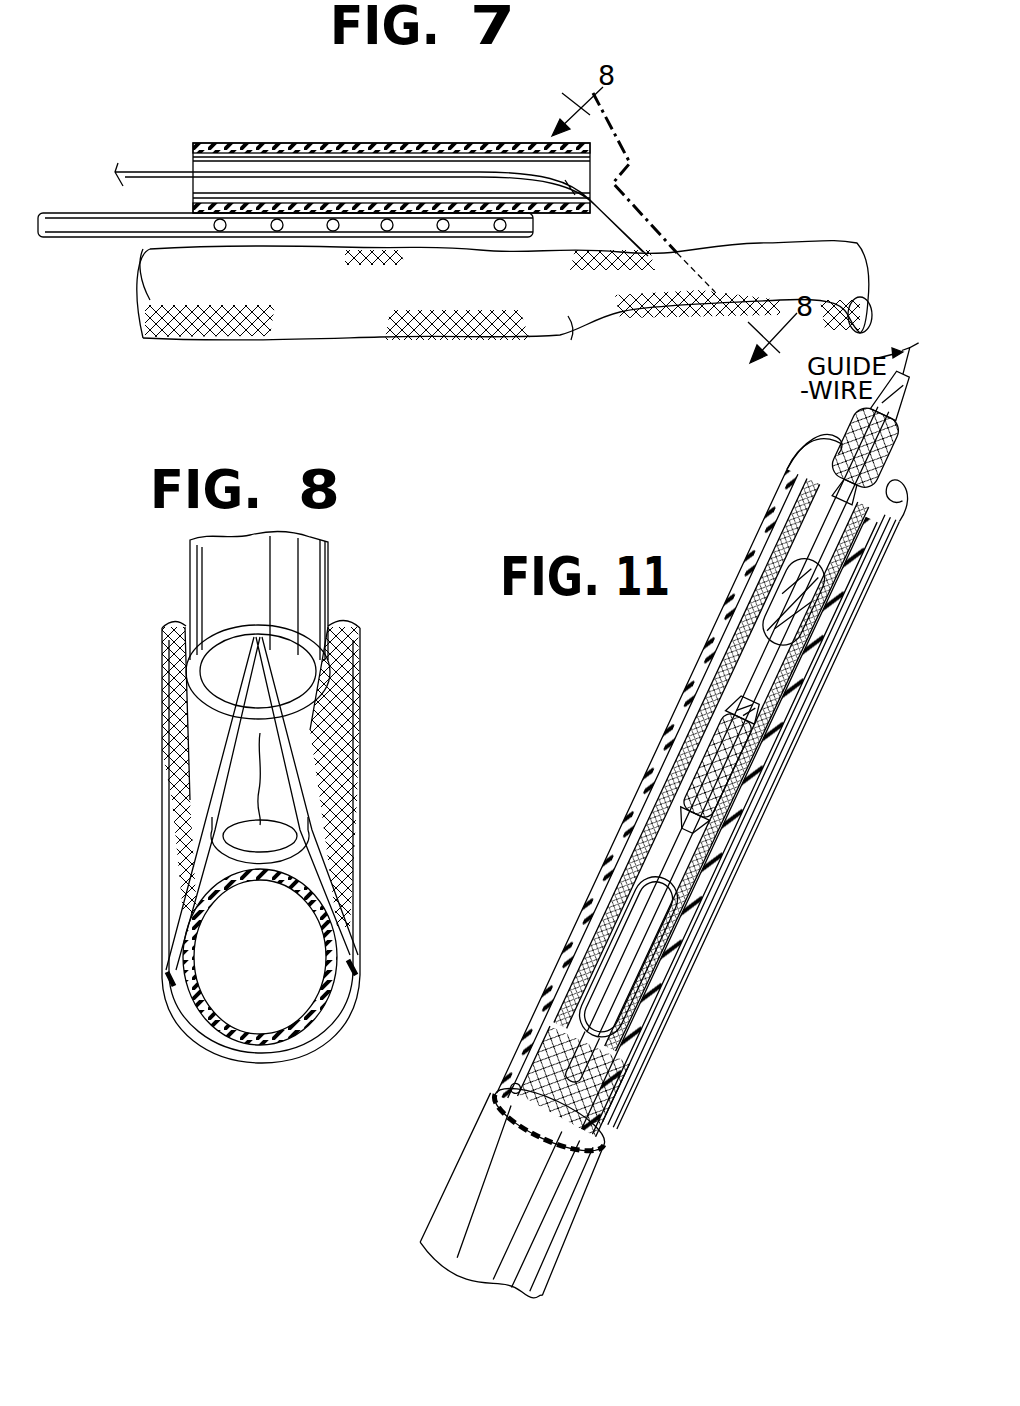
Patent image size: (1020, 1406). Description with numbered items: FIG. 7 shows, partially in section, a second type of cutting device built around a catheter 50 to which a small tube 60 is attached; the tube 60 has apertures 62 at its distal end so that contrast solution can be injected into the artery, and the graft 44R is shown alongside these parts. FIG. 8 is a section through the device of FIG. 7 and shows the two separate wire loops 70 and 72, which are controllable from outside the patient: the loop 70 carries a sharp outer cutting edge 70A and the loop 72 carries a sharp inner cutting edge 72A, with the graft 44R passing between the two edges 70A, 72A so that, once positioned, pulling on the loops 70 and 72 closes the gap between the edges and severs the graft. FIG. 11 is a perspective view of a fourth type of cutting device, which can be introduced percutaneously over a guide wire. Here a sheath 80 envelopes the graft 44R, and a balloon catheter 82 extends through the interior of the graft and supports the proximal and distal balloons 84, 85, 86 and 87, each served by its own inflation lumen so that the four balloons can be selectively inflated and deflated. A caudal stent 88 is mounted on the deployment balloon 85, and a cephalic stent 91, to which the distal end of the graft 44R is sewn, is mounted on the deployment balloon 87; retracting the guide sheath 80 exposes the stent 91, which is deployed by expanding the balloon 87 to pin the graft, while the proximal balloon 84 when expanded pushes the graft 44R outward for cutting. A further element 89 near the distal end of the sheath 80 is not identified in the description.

In FIG. 7, the catheter 50 is at (277, 143).
In FIG. 8, the catheter 50 is at (195, 568).
In FIG. 7, the small tube 60 is at (73, 237).
In FIG. 7, the apertures 62 is at (277, 231).
In FIG. 7, the graft 44R is at (570, 318).
In FIG. 8, the graft 44R is at (345, 708).
In FIG. 11, the graft 44R is at (597, 1087).
In FIG. 8, the wire loop 70 is at (236, 786).
In FIG. 8, the outer cutting edge 70A is at (262, 862).
In FIG. 8, the wire loop 72 is at (178, 918).
In FIG. 8, the inner cutting edge 72A is at (225, 1038).
In FIG. 11, the sheath 80 is at (557, 1240).
In FIG. 11, the balloon catheter 82 is at (590, 1037).
In FIG. 11, the proximal balloon 84 is at (640, 967).
In FIG. 11, the deployment balloon 85 is at (703, 823).
In FIG. 11, the balloon 86 is at (800, 620).
In FIG. 11, the deployment balloon 87 is at (840, 487).
In FIG. 11, the caudal stent 88 is at (707, 752).
In FIG. 11, the ring 89 is at (520, 1077).
In FIG. 11, the cephalic stent 91 is at (828, 447).